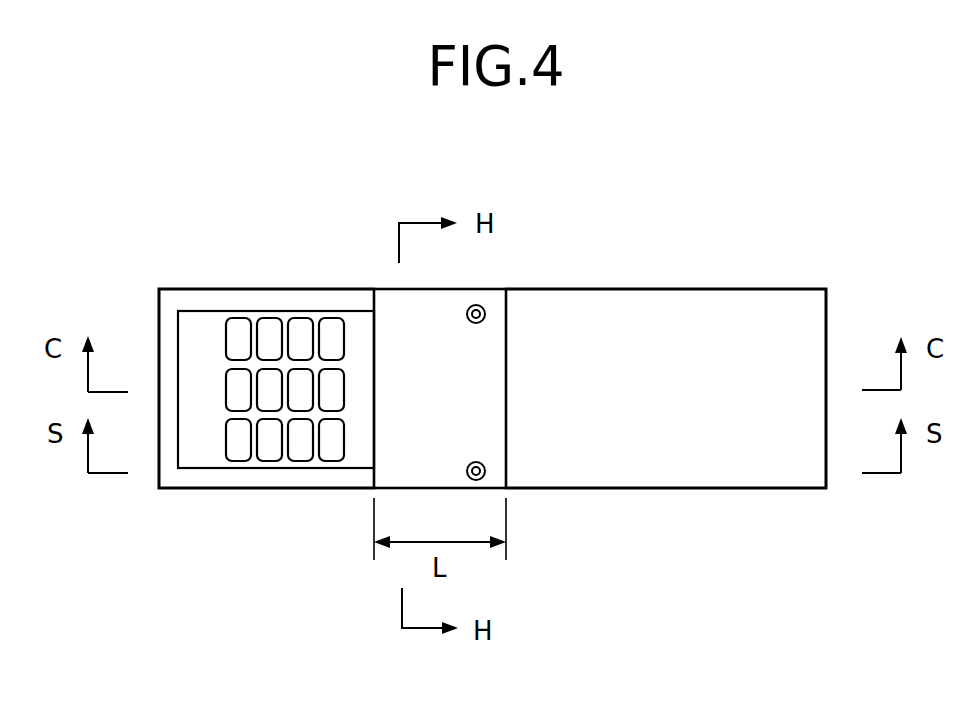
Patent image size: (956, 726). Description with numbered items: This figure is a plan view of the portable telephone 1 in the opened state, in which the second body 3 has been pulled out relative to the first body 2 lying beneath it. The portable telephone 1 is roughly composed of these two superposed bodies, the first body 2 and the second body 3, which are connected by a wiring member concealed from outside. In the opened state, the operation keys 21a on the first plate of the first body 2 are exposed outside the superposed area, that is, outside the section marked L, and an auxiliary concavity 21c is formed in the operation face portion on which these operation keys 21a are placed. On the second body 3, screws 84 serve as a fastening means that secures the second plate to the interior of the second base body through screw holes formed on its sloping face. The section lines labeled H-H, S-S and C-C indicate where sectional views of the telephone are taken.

The portable telephone 1 is at (737, 201).
The first body 2 is at (268, 300).
The second body 3 is at (665, 299).
The auxiliary concavity 21c is at (200, 331).
The operation keys 21a is at (271, 455).
The screws 84 is at (479, 305).